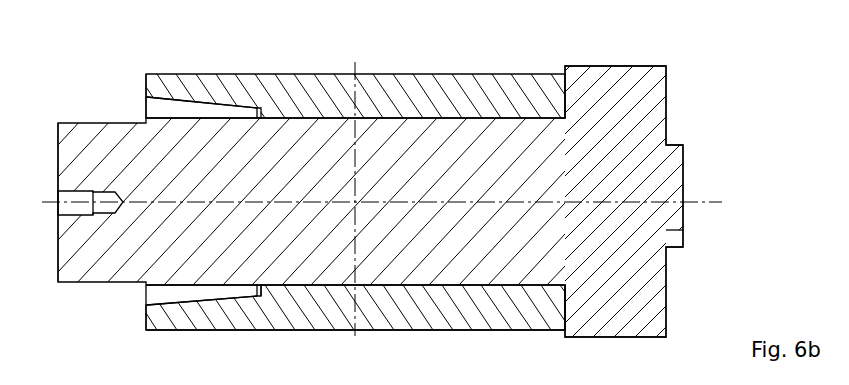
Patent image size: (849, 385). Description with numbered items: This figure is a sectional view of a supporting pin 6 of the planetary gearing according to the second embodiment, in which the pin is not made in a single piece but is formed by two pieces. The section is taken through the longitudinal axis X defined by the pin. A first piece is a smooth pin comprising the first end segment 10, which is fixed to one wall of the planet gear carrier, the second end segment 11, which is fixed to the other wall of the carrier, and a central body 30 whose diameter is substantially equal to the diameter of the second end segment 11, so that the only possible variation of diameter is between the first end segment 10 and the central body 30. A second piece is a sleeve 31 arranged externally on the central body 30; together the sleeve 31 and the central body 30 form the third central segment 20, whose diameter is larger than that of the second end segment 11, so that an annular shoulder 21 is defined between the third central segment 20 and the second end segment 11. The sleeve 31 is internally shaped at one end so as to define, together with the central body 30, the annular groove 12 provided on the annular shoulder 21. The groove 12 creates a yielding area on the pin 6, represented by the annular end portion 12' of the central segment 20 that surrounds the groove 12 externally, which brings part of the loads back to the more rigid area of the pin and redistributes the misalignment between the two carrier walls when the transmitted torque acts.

The supporting pin 6 is at (703, 67).
The first end segment 10 is at (629, 103).
The second end segment 11 is at (70, 259).
The annular groove 12 is at (203, 167).
The annular end portion 12' is at (207, 193).
The third central segment 20 is at (435, 67).
The annular shoulder 21 is at (146, 88).
The central body 30 is at (301, 241).
The sleeve 31 is at (450, 307).
The longitudinal axis X is at (704, 204).